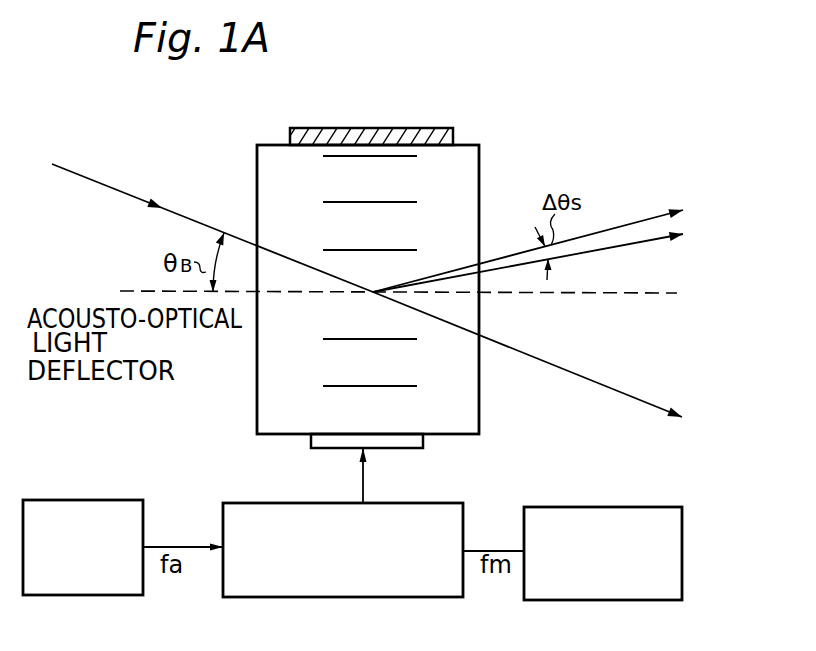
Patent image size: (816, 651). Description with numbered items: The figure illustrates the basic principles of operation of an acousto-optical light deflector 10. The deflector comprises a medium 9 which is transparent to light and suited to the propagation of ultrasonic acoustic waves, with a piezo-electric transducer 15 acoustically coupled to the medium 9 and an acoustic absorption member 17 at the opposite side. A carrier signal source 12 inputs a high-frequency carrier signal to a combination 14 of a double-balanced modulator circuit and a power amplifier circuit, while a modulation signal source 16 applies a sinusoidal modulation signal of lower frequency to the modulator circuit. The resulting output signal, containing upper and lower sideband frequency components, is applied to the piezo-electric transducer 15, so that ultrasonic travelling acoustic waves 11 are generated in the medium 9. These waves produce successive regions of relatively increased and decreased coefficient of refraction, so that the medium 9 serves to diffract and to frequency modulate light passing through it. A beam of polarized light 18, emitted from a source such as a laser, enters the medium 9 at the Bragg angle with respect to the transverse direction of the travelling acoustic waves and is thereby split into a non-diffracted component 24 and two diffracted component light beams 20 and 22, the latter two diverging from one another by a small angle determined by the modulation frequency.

The medium 9 is at (479, 413).
The acousto-optical light deflector 10 is at (277, 348).
The ultrasonic travelling acoustic waves 11 is at (327, 385).
The carrier signal source 12 is at (80, 500).
The double-balanced modulator circuit and power amplifier circuit 14 is at (342, 490).
The piezo-electric transducer 15 is at (318, 448).
The modulation signal source 16 is at (597, 507).
The acoustic absorption member 17 is at (417, 128).
The beam of polarized light 18 is at (110, 187).
The diffracted component light beam 20 is at (641, 242).
The diffracted component light beam 22 is at (625, 224).
The non-diffracted component 24 is at (600, 385).